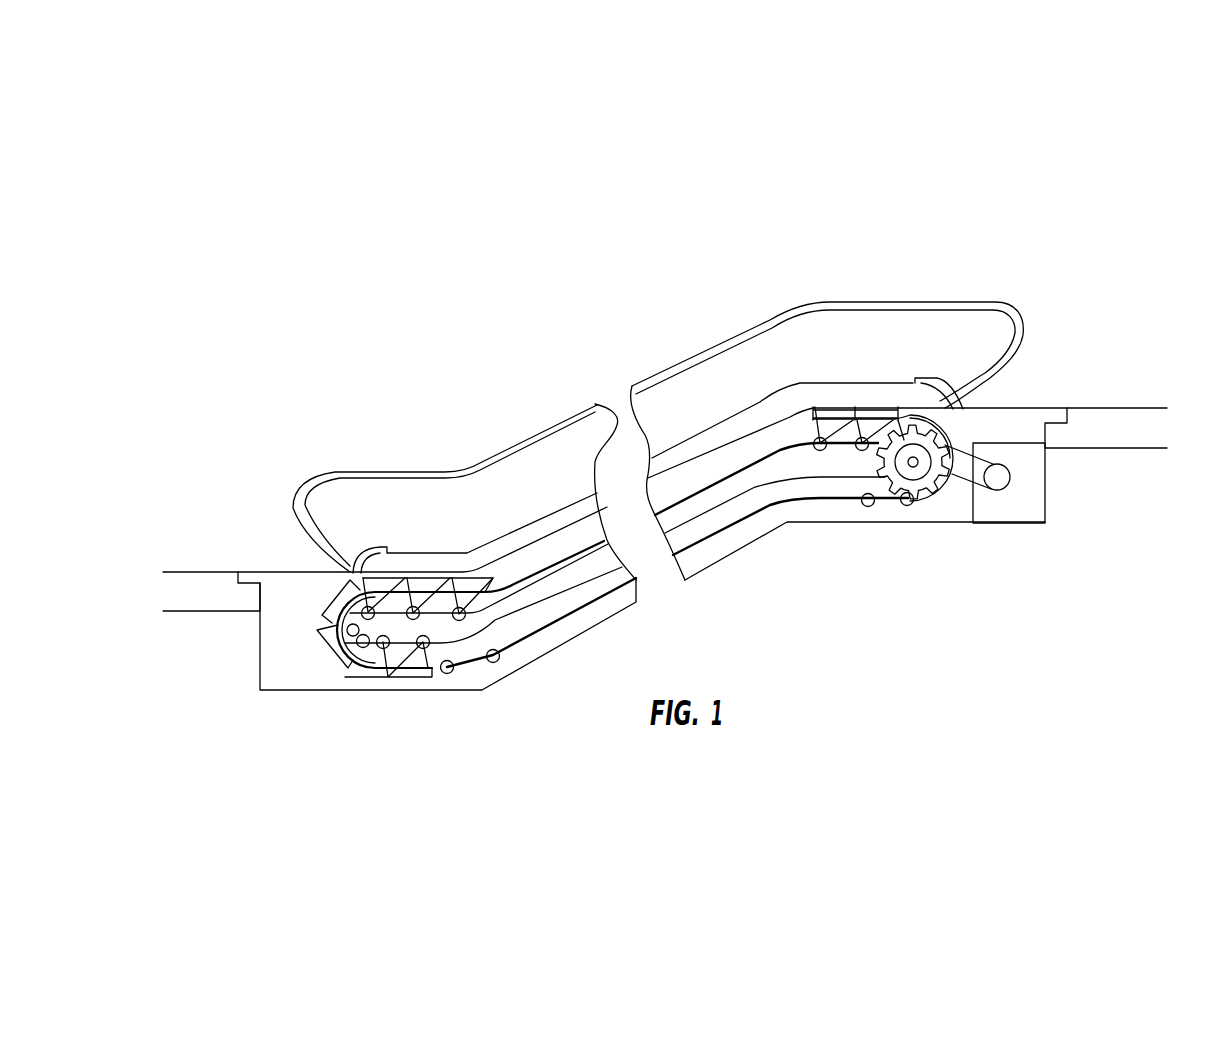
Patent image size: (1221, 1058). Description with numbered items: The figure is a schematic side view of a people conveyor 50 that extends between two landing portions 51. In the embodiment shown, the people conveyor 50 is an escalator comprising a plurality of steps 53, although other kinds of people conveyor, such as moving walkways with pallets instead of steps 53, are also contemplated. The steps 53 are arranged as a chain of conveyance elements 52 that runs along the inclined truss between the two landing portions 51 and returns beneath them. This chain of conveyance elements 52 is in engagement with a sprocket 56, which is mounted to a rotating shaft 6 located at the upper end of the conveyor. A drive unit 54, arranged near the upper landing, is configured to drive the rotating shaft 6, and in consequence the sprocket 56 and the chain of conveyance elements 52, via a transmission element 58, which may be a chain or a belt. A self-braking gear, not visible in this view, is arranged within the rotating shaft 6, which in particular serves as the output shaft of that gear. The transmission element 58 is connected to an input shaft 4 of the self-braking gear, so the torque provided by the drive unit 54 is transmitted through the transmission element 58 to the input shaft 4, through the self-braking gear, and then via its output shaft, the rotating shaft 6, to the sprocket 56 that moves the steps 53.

The people conveyor 50 is at (693, 305).
The landing portions 51 is at (199, 514).
The chain of conveyance elements 52 is at (890, 403).
The input shaft 4 is at (915, 459).
The drive unit 54 is at (1027, 445).
The sprocket 56 is at (918, 512).
The rotating shaft 6 is at (905, 502).
The steps 53 is at (318, 650).
The transmission element 58 is at (978, 490).